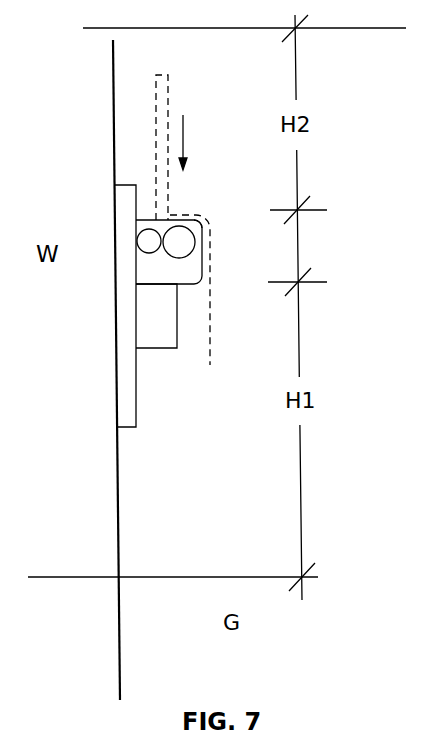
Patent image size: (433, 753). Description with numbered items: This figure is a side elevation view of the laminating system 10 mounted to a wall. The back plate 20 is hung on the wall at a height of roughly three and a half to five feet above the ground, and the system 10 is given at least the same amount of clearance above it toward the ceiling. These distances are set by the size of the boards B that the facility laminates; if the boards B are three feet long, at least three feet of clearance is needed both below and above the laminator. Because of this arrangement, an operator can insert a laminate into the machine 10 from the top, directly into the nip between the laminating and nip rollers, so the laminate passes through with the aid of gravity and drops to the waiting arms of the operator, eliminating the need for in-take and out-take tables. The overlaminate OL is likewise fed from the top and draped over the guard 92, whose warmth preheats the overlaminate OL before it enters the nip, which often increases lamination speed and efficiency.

The system 10 is at (224, 232).
The back plate 20 is at (137, 420).
The guard 92 is at (200, 214).
The boards B is at (173, 86).
The overlaminate OL is at (226, 280).